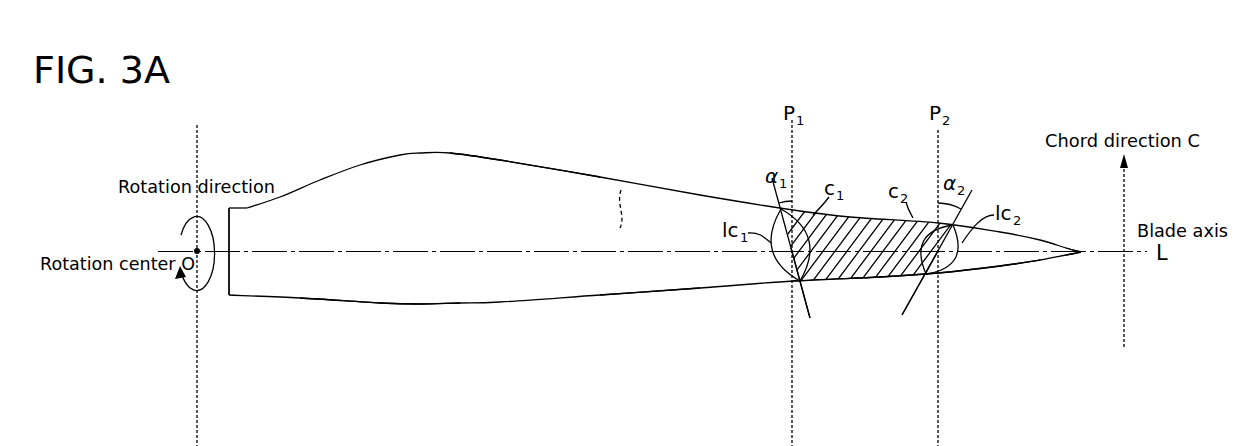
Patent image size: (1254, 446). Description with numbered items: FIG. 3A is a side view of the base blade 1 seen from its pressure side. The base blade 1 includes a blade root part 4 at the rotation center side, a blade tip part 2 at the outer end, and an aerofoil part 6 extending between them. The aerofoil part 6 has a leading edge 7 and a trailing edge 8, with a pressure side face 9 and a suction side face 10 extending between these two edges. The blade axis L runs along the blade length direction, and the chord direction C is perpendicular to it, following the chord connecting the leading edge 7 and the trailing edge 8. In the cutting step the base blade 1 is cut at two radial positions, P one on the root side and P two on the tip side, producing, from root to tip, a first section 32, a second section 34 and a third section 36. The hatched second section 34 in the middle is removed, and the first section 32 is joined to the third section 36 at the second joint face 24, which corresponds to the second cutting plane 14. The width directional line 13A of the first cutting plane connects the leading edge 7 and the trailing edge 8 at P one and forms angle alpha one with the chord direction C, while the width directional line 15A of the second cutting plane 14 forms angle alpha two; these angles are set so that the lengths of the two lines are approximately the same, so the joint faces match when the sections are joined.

The base blade 1 is at (418, 112).
The blade tip part 2 is at (1083, 255).
The blade root part 4 is at (241, 297).
The aerofoil part 6 is at (363, 292).
The leading edge 7 is at (437, 306).
The trailing edge 8 is at (488, 157).
The pressure side face 9 is at (549, 215).
The suction side face 10 is at (621, 190).
The width directional line of the first cutting plane 13A is at (806, 300).
The second cutting plane 14 is at (799, 274).
The width directional line of the second cutting plane 15A is at (917, 293).
The second joint face 24 is at (907, 271).
The first section 32 is at (643, 277).
The second section 34 is at (857, 273).
The third section 36 is at (1005, 262).